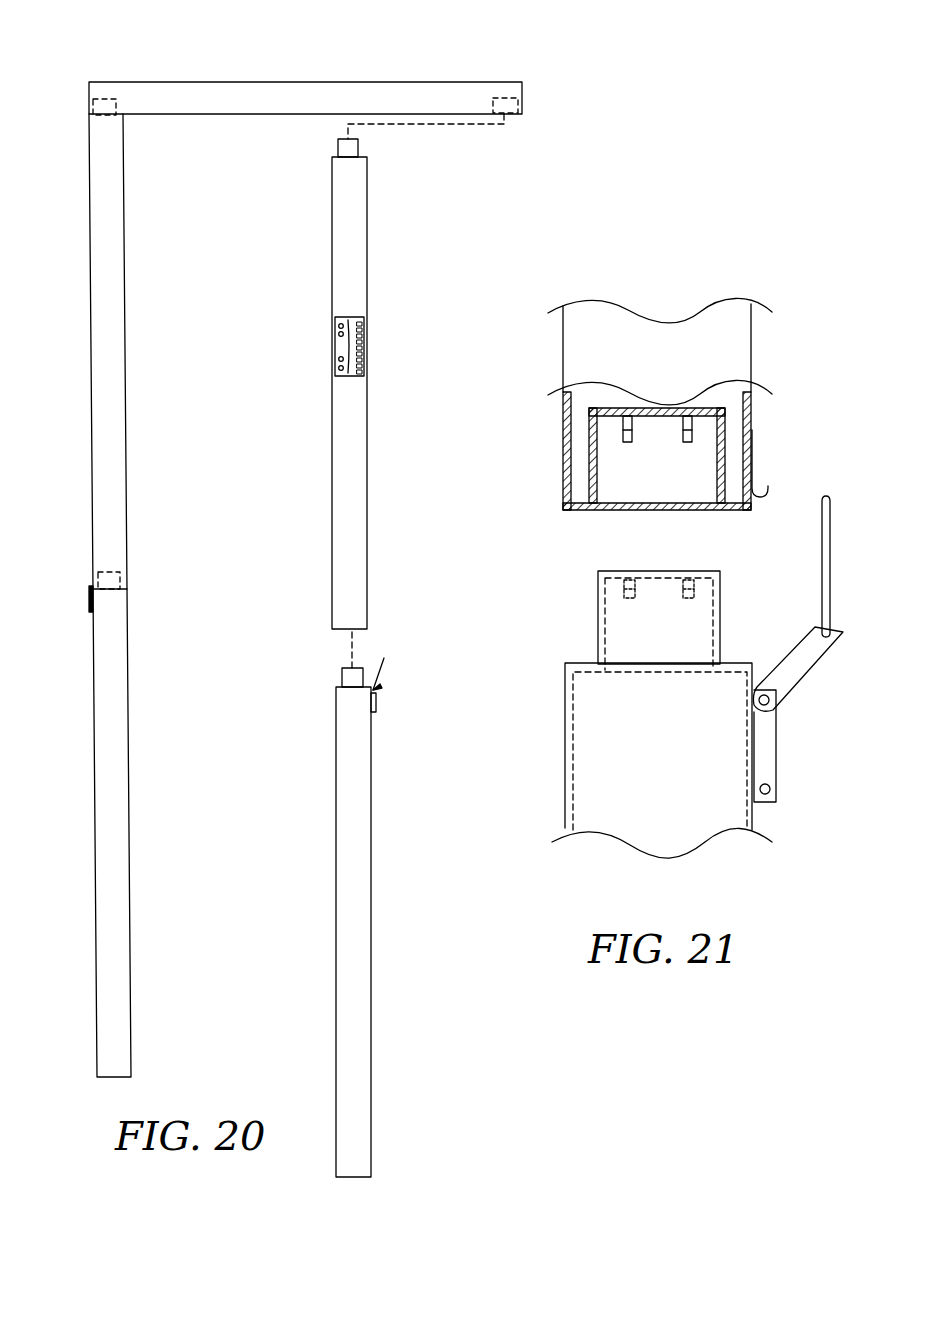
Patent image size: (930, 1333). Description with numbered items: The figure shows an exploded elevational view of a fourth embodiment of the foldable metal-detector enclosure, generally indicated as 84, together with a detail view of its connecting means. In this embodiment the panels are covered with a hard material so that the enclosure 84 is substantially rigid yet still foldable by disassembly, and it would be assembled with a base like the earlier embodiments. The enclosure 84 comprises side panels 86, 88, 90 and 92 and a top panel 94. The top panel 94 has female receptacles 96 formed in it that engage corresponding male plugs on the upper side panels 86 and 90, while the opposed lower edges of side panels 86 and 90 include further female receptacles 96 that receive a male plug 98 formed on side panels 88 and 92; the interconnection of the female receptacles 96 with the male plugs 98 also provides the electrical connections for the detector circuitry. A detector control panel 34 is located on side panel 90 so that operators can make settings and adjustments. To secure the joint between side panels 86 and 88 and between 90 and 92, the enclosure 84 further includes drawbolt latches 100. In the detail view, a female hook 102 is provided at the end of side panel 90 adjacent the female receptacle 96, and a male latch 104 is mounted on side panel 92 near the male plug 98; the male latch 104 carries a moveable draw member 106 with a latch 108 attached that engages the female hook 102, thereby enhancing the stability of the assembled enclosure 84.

In FIG. 20, the detector control panel 34 is at (356, 324).
In FIG. 20, the fourth embodiment of the foldable enclosure 84 is at (311, 29).
In FIG. 20, the side panel 86 is at (102, 276).
In FIG. 20, the side panel 88 is at (102, 748).
In FIG. 20, the side panel 90 is at (362, 258).
In FIG. 21, the side panel 90 is at (742, 340).
In FIG. 20, the side panel 92 is at (370, 812).
In FIG. 21, the side panel 92 is at (580, 736).
In FIG. 20, the top panel 94 is at (340, 80).
In FIG. 20, the female receptacle 96 is at (88, 95).
In FIG. 21, the female receptacle 96 is at (598, 480).
In FIG. 20, the male plug 98 is at (358, 150).
In FIG. 21, the male plug 98 is at (600, 612).
In FIG. 20, the drawbolt latch 100 is at (79, 607).
In FIG. 20, the female hook 102 is at (370, 628).
In FIG. 21, the female hook 102 is at (770, 492).
In FIG. 20, the male latch 104 is at (377, 708).
In FIG. 21, the male latch 104 is at (770, 748).
In FIG. 20, the moveable draw member 106 is at (380, 688).
In FIG. 21, the moveable draw member 106 is at (808, 662).
In FIG. 20, the latch 108 is at (384, 662).
In FIG. 21, the latch 108 is at (828, 556).